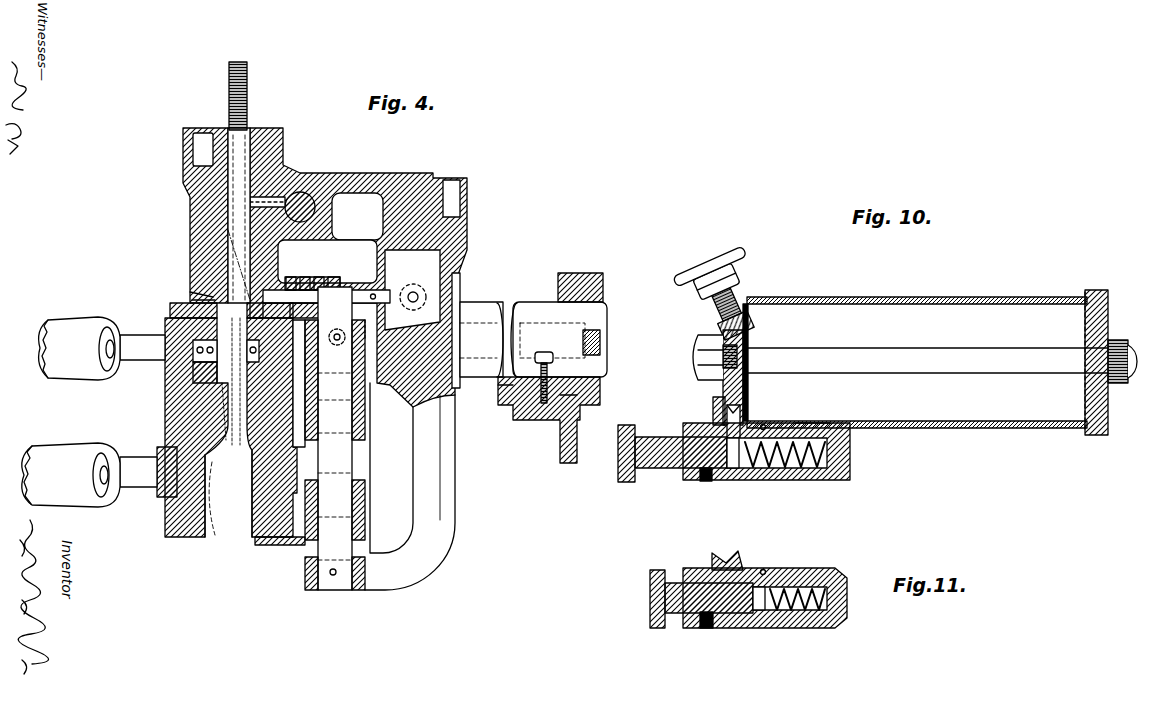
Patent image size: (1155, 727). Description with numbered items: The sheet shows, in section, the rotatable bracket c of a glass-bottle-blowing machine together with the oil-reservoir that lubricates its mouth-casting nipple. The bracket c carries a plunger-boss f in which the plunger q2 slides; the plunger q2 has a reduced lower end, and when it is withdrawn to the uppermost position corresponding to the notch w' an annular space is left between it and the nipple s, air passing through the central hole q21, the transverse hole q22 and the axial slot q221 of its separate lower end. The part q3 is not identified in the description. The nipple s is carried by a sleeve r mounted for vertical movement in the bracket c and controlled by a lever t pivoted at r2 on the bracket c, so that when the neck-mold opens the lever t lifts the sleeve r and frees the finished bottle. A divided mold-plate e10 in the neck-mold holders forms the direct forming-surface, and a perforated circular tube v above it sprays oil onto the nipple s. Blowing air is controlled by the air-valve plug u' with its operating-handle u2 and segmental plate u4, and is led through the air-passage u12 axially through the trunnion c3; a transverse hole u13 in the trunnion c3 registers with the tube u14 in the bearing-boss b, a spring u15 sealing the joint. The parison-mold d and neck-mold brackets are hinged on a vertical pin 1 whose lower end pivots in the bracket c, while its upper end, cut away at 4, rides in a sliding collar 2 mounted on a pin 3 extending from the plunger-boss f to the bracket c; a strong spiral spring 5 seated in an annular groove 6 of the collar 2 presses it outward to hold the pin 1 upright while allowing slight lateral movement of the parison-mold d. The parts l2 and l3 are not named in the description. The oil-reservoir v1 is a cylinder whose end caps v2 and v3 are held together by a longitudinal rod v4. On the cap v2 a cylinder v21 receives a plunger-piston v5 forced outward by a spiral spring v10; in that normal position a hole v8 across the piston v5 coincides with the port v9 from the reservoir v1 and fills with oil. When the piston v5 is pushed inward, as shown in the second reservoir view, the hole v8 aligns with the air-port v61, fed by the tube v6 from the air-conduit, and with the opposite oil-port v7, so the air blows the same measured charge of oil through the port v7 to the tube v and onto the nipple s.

In FIG. 4, the rotatable bracket c is at (437, 524).
In FIG. 4, the trunnion c3 is at (585, 318).
In FIG. 4, the operating-handle u2 is at (357, 216).
In FIG. 4, the plug u' is at (315, 182).
In FIG. 4, the segmental plate u4 is at (289, 193).
In FIG. 4, the notch w' is at (197, 192).
In FIG. 4, the air-passage u12 is at (525, 300).
In FIG. 4, the transverse hole u13 is at (553, 360).
In FIG. 4, the tube u14 is at (512, 390).
In FIG. 4, the spring u15 is at (580, 392).
In FIG. 4, the plunger-boss f is at (198, 218).
In FIG. 4, the plunger q2 is at (232, 150).
In FIG. 4, the adjusting screw q3 is at (247, 80).
In FIG. 4, the central hole q21 is at (228, 493).
In FIG. 4, the transverse hole q22 is at (213, 280).
In FIG. 4, the axial slot q221 is at (213, 295).
In FIG. 4, the sleeve r is at (187, 302).
In FIG. 4, the pivot r2 is at (460, 268).
In FIG. 4, the parison-mold d is at (187, 533).
In FIG. 4, the mouth-casting nipple s is at (192, 383).
In FIG. 4, the divided mold-plate e10 is at (200, 390).
In FIG. 4, the circular tube v is at (165, 330).
In FIG. 4, the lever t is at (470, 322).
In FIG. 4, the bearing-boss b is at (553, 420).
In FIG. 4, the hinging pin 1 is at (333, 512).
In FIG. 4, the pin l2 is at (335, 364).
In FIG. 4, the pin l3 is at (377, 358).
In FIG. 4, the sliding collar 2 is at (316, 290).
In FIG. 4, the pin 3 is at (328, 292).
In FIG. 4, the slot 4 is at (416, 282).
In FIG. 4, the spiral spring 5 is at (289, 288).
In FIG. 4, the annular groove 6 is at (303, 288).
In FIG. 10, the oil-reservoir v1 is at (918, 298).
In FIG. 10, the end cap v2 is at (713, 410).
In FIG. 10, the end cap v3 is at (1108, 408).
In FIG. 10, the longitudinal rod v4 is at (948, 362).
In FIG. 10, the plunger-piston v5 is at (645, 462).
In FIG. 11, the plunger-piston v5 is at (655, 600).
In FIG. 10, the tube v6 is at (764, 426).
In FIG. 11, the tube v6 is at (765, 571).
In FIG. 10, the air-port v61 is at (805, 424).
In FIG. 10, the oil-port v7 is at (765, 468).
In FIG. 11, the oil-port v7 is at (760, 612).
In FIG. 10, the hole v8 is at (726, 478).
In FIG. 11, the hole v8 is at (725, 625).
In FIG. 10, the port v9 is at (741, 420).
In FIG. 11, the port v9 is at (733, 568).
In FIG. 10, the spiral spring v10 is at (820, 465).
In FIG. 11, the spiral spring v10 is at (815, 610).
In FIG. 10, the cylinder v21 is at (833, 457).
In FIG. 11, the cylinder v21 is at (830, 600).